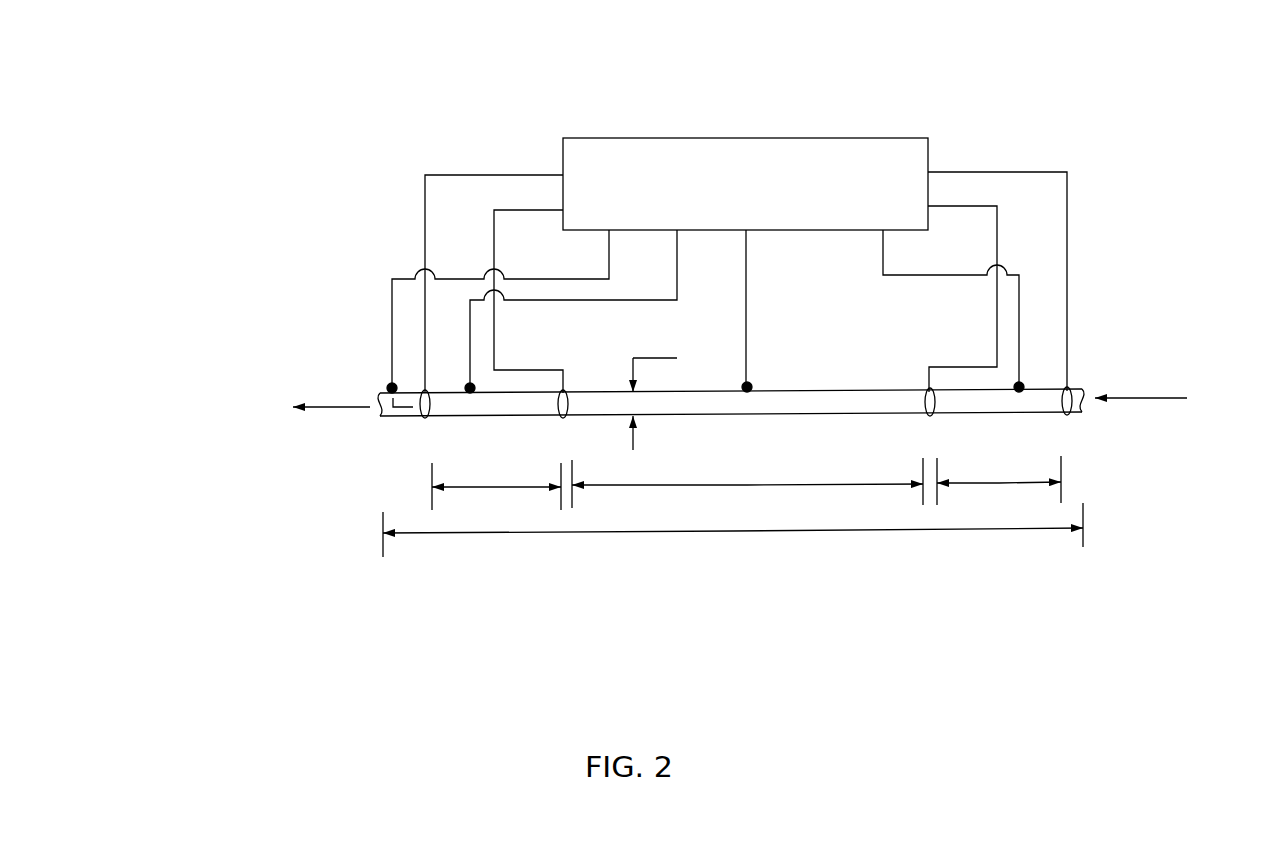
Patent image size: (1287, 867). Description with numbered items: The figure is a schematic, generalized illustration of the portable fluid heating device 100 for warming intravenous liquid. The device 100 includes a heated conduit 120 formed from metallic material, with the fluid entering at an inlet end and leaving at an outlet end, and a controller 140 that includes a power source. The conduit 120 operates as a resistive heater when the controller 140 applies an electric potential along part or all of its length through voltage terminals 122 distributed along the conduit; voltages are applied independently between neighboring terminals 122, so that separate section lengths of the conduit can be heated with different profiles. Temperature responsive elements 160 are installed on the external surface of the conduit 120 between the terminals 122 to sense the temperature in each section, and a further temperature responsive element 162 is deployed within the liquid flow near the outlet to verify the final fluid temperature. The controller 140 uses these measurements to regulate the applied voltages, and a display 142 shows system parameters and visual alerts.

The device 100 is at (305, 187).
The conduit 120 is at (390, 422).
The voltage terminals 122 is at (410, 427).
The controller 140 is at (557, 133).
The display 142 is at (702, 282).
The temperature responsive elements 160 is at (751, 385).
The temperature responsive element 162 is at (392, 388).